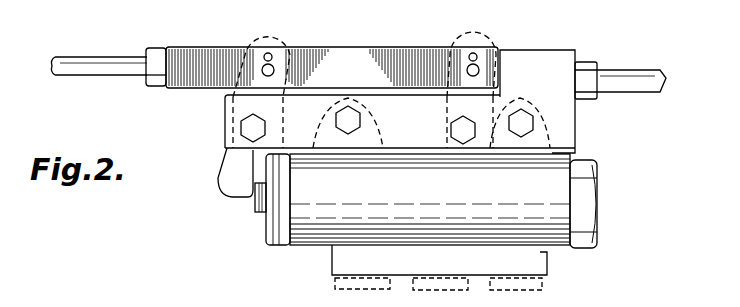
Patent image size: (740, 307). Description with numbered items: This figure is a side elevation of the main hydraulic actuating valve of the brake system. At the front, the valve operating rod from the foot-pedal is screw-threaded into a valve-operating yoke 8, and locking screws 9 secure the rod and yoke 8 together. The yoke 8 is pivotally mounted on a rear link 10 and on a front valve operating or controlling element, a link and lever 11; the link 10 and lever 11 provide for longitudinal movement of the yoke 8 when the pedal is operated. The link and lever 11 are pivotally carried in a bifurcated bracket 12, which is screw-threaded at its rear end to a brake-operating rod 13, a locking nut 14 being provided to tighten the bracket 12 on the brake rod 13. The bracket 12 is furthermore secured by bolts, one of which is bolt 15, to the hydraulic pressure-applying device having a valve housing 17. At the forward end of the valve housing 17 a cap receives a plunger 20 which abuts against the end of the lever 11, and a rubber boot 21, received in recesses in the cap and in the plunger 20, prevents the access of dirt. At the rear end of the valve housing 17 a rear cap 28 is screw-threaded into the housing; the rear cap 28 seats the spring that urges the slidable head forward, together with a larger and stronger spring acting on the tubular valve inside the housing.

The valve-operating yoke 8 is at (252, 73).
The locking screws 9 is at (155, 52).
The rear link 10 is at (448, 97).
The link and lever 11 is at (222, 176).
The bifurcated bracket 12 is at (538, 60).
The brake-operating rod 13 is at (650, 94).
The locking nut 14 is at (586, 64).
The bolt 15 is at (346, 112).
The valve housing 17 is at (550, 253).
The plunger 20 is at (252, 207).
The rubber boot 21 is at (269, 238).
The rear cap 28 is at (580, 203).